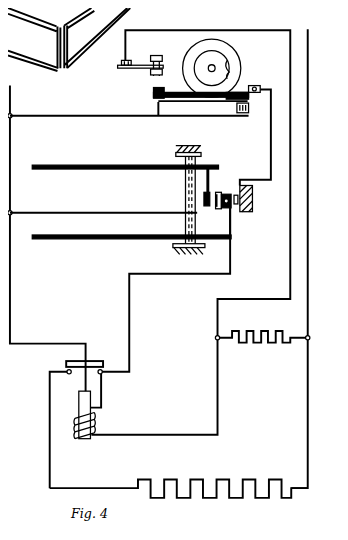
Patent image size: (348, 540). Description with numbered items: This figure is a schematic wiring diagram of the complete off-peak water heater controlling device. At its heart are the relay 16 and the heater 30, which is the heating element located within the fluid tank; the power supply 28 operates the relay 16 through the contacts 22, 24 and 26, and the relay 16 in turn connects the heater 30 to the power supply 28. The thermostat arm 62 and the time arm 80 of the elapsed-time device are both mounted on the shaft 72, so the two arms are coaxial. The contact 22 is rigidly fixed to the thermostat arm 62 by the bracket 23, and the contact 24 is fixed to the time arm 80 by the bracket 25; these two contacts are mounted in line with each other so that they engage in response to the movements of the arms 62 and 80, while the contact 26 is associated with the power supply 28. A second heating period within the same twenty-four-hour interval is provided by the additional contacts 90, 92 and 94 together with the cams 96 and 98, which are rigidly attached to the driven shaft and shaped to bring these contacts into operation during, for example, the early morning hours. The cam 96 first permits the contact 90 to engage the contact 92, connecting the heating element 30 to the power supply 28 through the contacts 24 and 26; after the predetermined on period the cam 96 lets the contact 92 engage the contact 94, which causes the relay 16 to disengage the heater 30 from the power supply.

The power supply 28 is at (6, 80).
The contact 94 is at (147, 66).
The contact 92 is at (150, 88).
The contact 90 is at (155, 99).
The cam 98 is at (236, 41).
The cam 96 is at (226, 62).
The thermostat arm 62 is at (128, 160).
The arm 80 is at (72, 238).
The shaft 72 is at (203, 158).
The bracket 23 is at (209, 190).
The contact 22 is at (217, 189).
The contact 24 is at (235, 191).
The bracket 25 is at (219, 224).
The contact 26 is at (246, 212).
The relay 16 is at (119, 428).
The heater 30 is at (180, 505).